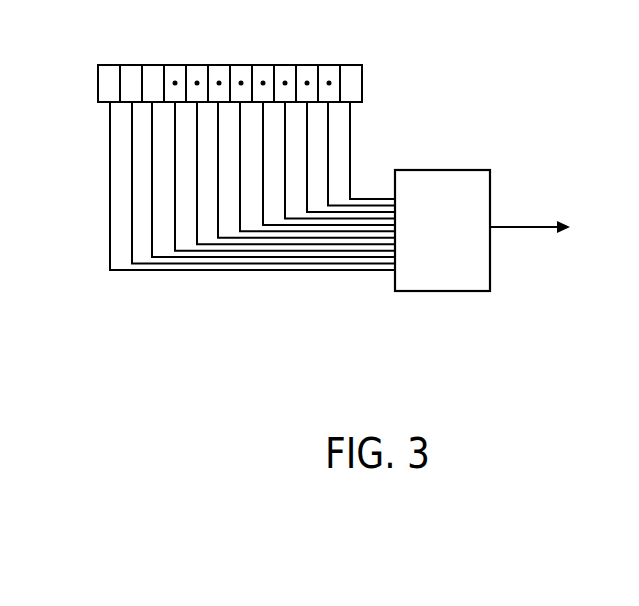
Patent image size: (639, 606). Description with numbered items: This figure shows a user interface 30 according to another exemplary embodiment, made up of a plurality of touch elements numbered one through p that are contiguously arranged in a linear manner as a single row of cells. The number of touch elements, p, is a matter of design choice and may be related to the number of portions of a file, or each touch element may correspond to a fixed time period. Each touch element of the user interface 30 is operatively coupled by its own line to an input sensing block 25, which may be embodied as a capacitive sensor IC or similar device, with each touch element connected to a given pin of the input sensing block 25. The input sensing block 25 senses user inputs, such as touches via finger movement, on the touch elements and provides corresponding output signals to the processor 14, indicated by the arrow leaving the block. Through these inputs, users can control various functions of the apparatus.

The user interface 30 is at (226, 65).
The input sensing block 25 is at (440, 170).
The processor 14 is at (562, 227).